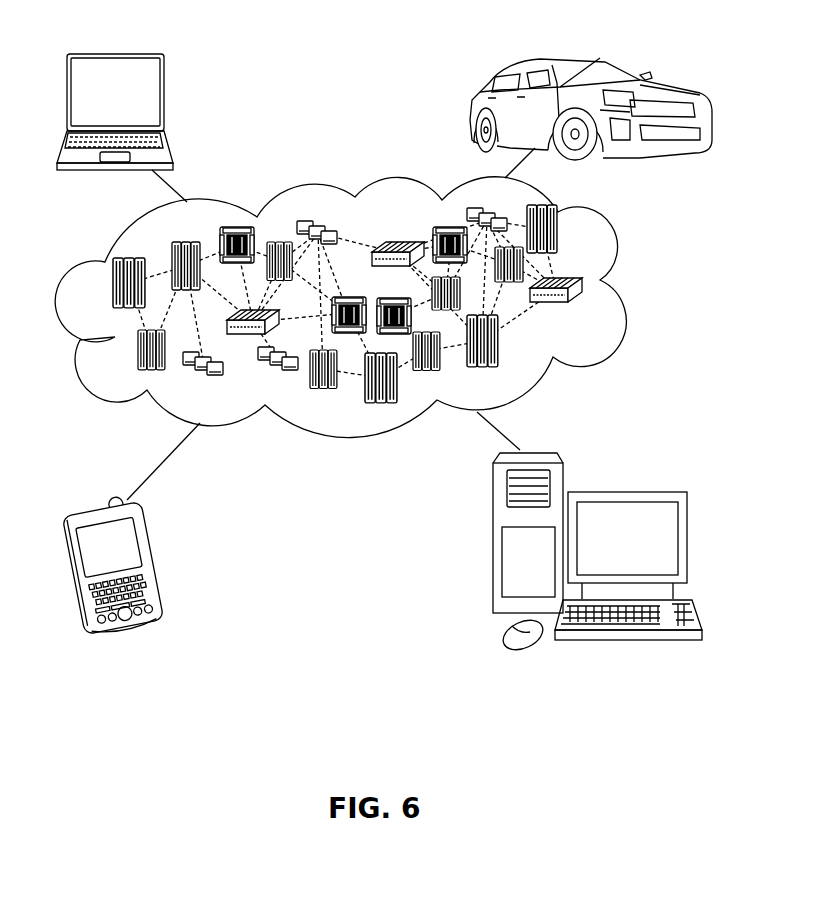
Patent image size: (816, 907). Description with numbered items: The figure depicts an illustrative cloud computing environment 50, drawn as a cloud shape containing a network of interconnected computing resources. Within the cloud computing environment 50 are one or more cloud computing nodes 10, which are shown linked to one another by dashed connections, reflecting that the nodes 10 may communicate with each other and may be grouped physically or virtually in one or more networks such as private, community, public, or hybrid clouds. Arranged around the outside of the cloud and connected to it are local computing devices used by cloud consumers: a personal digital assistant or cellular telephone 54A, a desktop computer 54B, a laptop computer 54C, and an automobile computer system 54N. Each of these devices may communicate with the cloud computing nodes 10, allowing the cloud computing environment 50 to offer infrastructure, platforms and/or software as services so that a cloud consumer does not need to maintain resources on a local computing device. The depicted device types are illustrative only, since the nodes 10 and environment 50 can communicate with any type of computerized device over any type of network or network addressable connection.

The cloud computing node 10 is at (600, 313).
The cloud computing environment 50 is at (623, 292).
The personal digital assistant or cellular telephone 54A is at (155, 558).
The desktop computer 54B is at (633, 480).
The laptop computer 54C is at (164, 99).
The automobile computer system 54N is at (470, 108).